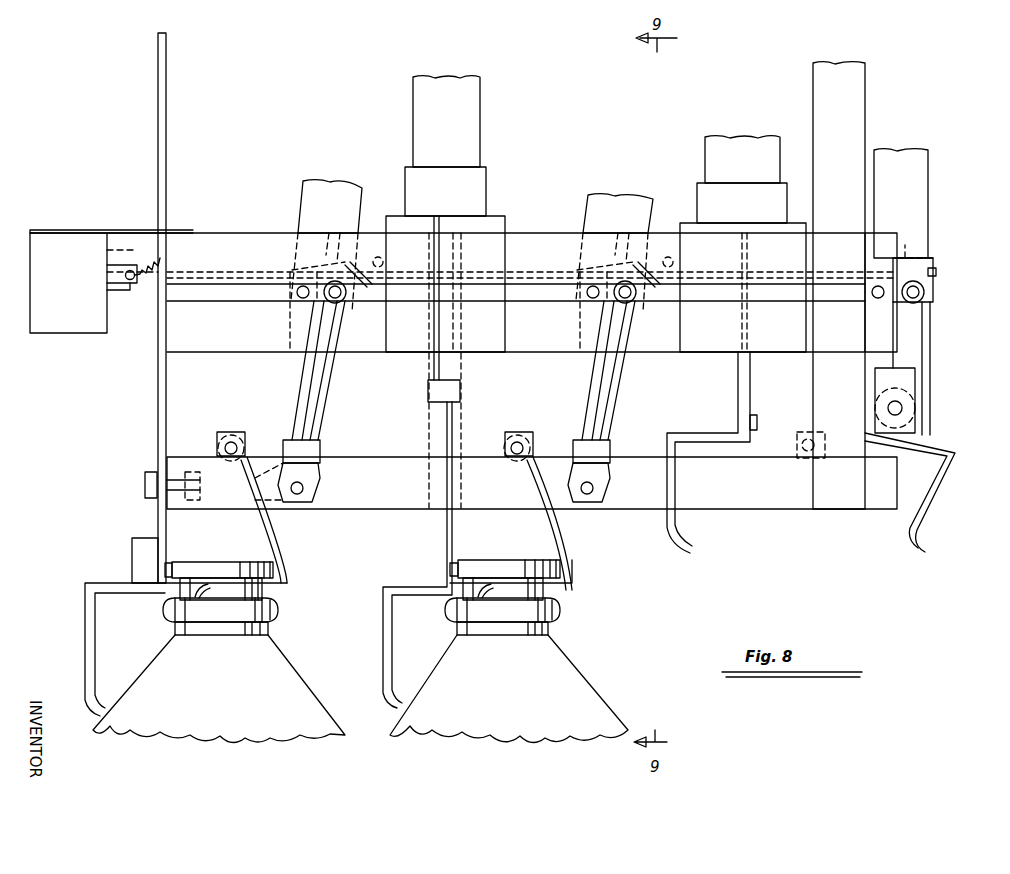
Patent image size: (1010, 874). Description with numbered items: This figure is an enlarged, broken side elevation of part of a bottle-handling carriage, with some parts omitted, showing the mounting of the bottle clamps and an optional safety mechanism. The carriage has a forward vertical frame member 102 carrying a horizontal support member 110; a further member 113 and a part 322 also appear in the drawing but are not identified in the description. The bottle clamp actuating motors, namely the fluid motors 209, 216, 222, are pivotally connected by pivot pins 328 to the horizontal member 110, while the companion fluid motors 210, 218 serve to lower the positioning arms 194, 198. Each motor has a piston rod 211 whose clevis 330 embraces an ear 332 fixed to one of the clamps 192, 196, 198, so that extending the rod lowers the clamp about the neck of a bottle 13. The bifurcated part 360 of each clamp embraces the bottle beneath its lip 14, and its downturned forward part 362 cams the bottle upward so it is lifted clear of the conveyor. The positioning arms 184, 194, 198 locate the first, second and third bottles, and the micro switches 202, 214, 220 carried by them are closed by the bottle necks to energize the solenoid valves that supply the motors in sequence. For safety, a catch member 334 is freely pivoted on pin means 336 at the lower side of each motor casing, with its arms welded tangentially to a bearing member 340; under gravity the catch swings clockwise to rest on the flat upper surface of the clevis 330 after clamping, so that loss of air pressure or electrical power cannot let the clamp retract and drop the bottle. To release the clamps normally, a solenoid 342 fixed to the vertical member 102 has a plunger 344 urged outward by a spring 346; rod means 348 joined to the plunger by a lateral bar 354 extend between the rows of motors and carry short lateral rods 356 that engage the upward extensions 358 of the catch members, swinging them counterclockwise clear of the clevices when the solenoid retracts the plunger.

The bottle 13 is at (312, 696).
The lip 14 is at (255, 562).
The vertical frame member 102 is at (158, 378).
The horizontal support member 110 is at (540, 240).
The lower support bar 113 is at (405, 457).
The bottle positioning arm 184 is at (85, 612).
The bottle clamp 192 is at (268, 532).
The positioning arm 194 is at (383, 633).
The bottle clamp 196 is at (572, 546).
The positioning arm 198 is at (720, 432).
The micro switch 202 is at (172, 566).
The fluid motor 209 is at (352, 190).
The fluid motor 210 is at (413, 100).
The piston rod 211 is at (303, 403).
The micro switch 214 is at (462, 564).
The fluid motor 216 is at (618, 199).
The fluid motor 218 is at (738, 146).
The micro switch 220 is at (757, 420).
The fluid motor 222 is at (928, 182).
The guide block 322 is at (915, 432).
The pivot pin 328 is at (298, 296).
The clevis 330 is at (285, 447).
The ear 332 is at (298, 503).
The catch member 334 is at (333, 378).
The pin means 336 is at (342, 298).
The bearing member 340 is at (356, 266).
The solenoid 342 is at (70, 333).
The plunger 344 is at (126, 266).
The spring 346 is at (158, 259).
The rod means 348 is at (194, 274).
The lateral bar 354 is at (115, 284).
The short lateral rod 356 is at (382, 264).
The upward extension 358 is at (340, 242).
The bifurcated part 360 is at (272, 590).
The downturned forward part 362 is at (192, 590).